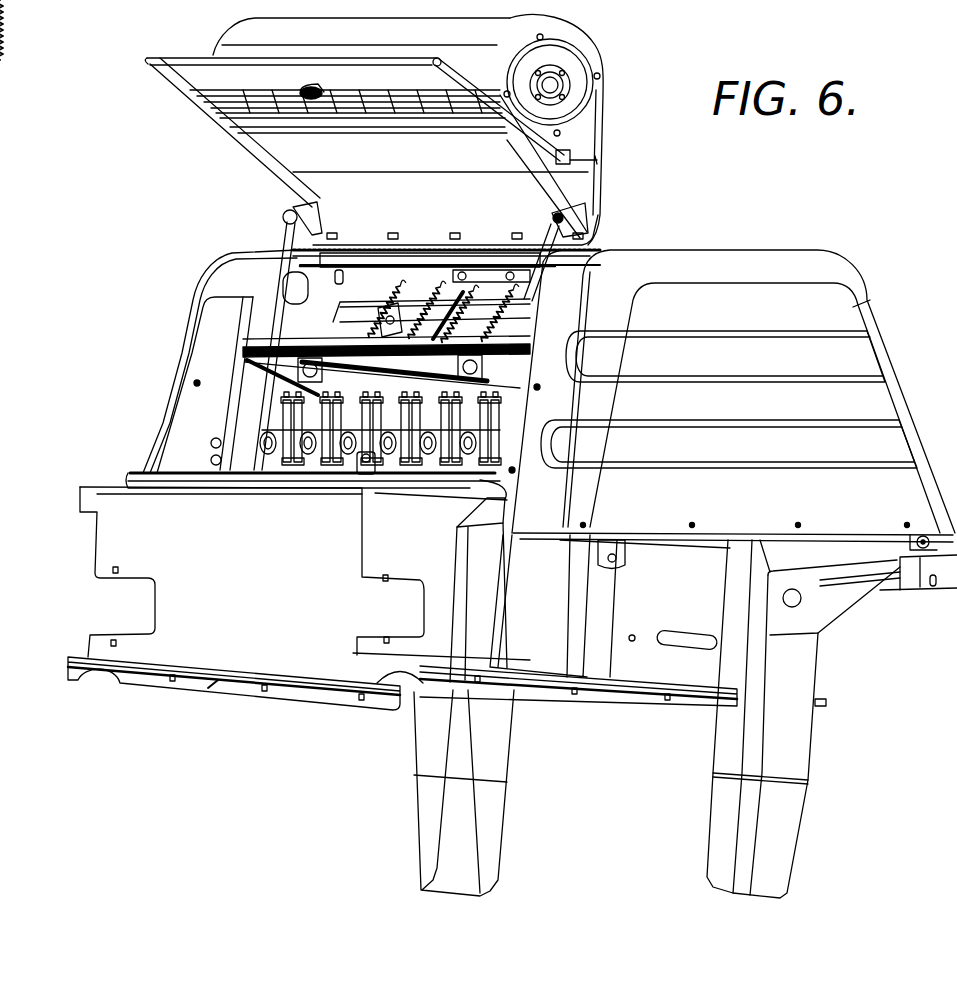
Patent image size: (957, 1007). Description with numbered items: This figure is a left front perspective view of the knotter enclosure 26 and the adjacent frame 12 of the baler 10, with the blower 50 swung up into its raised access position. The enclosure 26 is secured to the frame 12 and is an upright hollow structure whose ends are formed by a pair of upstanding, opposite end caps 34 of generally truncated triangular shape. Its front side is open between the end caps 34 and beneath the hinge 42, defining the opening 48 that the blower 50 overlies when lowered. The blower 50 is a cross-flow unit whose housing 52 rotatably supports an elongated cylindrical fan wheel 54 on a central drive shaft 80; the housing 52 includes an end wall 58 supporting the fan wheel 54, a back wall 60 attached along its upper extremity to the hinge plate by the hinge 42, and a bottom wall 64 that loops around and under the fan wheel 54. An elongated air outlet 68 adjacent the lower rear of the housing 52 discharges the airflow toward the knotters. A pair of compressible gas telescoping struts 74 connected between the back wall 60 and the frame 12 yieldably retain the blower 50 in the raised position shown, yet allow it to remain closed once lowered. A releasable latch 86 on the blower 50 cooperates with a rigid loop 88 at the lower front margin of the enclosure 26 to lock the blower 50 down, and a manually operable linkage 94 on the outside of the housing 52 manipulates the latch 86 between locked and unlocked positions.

The baler 10 is at (210, 717).
The frame 12 is at (820, 743).
The enclosure 26 is at (760, 238).
The end caps 34 is at (182, 353).
The hinge 42 is at (425, 247).
The opening 48 is at (497, 405).
The blower 50 is at (625, 73).
The housing 52 is at (205, 50).
The fan wheel 54 is at (430, 120).
The end wall 58 is at (593, 113).
The back wall 60 is at (170, 73).
The bottom wall 64 is at (262, 30).
The air outlet 68 is at (213, 97).
The gas telescoping struts 74 is at (282, 243).
The central drive shaft 80 is at (556, 83).
The releasable latch 86 is at (300, 118).
The rigid loop 88 is at (360, 458).
The manually operable linkage 94 is at (573, 147).